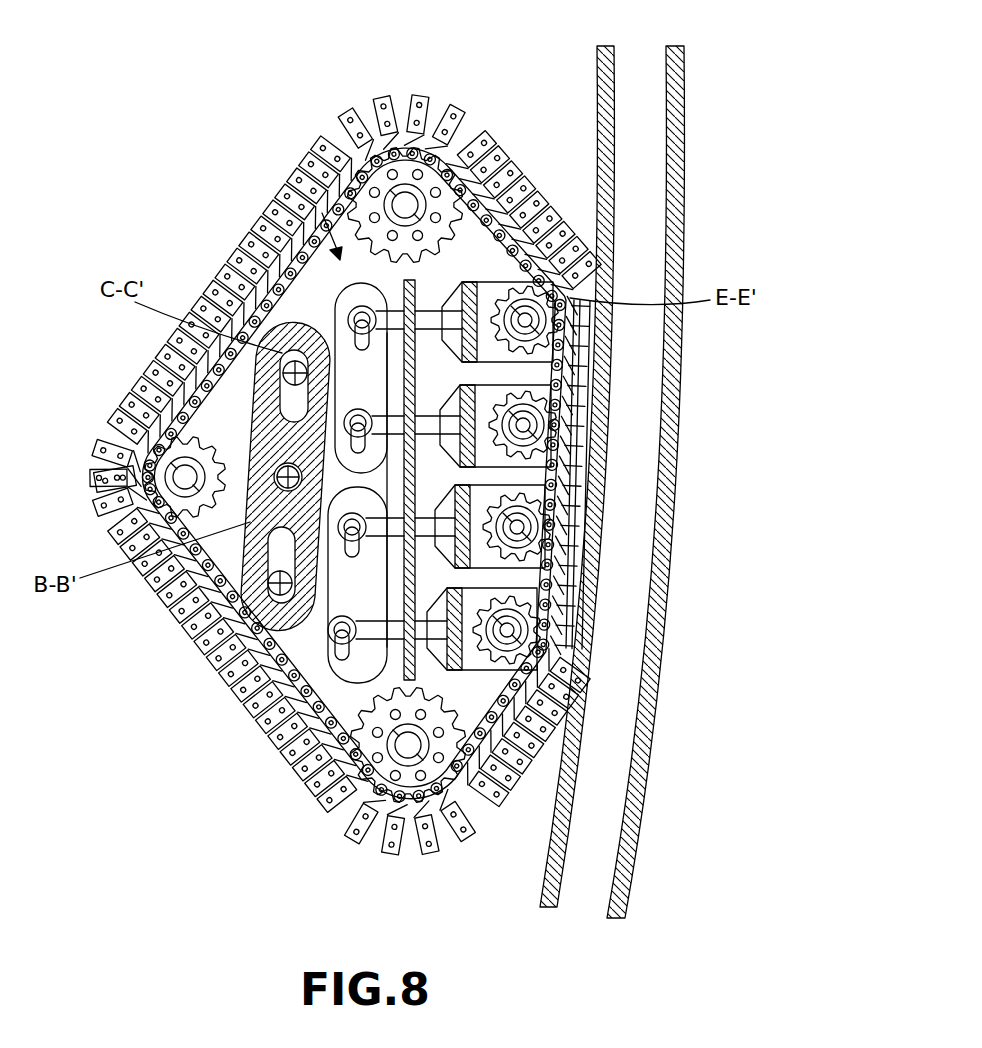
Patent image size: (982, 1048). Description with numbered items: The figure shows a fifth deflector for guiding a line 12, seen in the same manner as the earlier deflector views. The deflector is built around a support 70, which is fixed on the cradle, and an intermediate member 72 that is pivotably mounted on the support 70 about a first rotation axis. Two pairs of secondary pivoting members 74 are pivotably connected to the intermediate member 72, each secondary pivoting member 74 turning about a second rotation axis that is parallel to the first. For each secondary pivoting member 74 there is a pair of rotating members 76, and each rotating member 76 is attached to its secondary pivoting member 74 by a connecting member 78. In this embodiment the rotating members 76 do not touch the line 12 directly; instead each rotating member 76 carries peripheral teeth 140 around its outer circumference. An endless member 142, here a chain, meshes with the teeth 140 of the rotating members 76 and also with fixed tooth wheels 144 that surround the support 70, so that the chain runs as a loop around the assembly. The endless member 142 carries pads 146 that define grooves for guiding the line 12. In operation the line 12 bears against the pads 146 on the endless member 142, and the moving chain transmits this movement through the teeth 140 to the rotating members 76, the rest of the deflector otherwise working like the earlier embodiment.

The line 12 is at (678, 128).
The support 70 is at (310, 435).
The intermediate member 72 is at (265, 438).
The secondary pivoting member 74 is at (333, 313).
The rotating member 76 is at (575, 395).
The connecting member 78 is at (448, 283).
The peripheral teeth 140 is at (573, 270).
The endless member 142 is at (547, 517).
The fixed tooth wheels 144 is at (406, 170).
The pads 146 is at (573, 423).